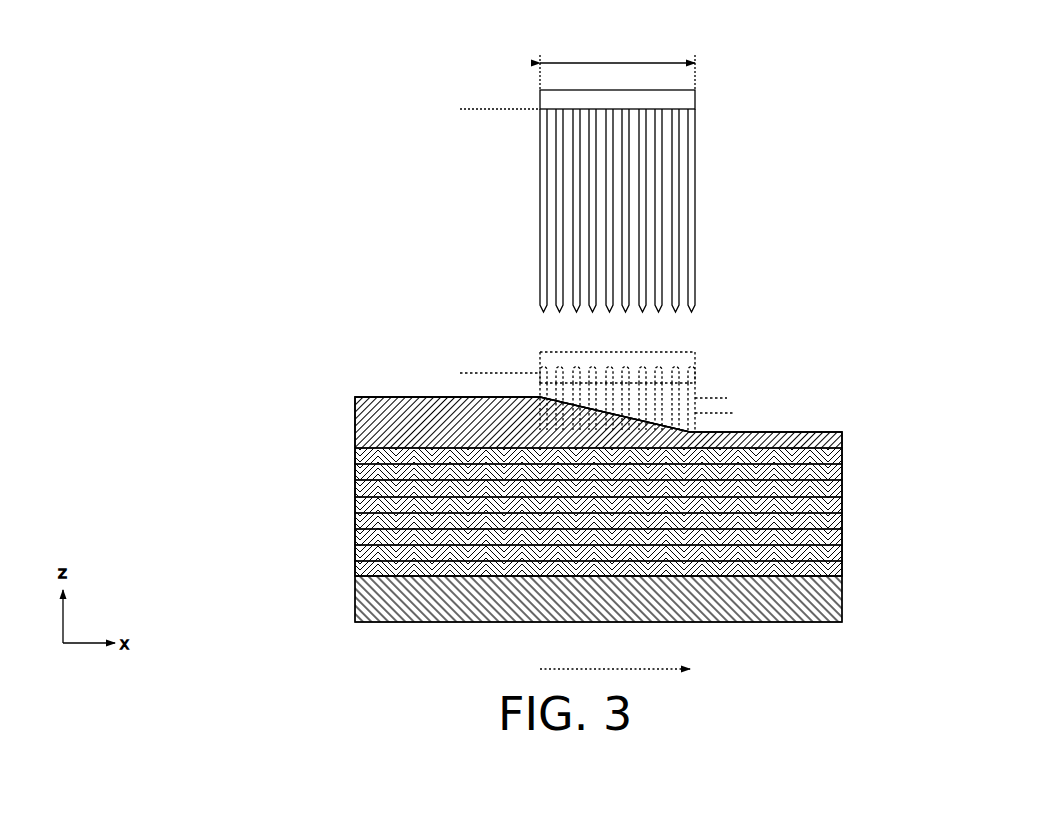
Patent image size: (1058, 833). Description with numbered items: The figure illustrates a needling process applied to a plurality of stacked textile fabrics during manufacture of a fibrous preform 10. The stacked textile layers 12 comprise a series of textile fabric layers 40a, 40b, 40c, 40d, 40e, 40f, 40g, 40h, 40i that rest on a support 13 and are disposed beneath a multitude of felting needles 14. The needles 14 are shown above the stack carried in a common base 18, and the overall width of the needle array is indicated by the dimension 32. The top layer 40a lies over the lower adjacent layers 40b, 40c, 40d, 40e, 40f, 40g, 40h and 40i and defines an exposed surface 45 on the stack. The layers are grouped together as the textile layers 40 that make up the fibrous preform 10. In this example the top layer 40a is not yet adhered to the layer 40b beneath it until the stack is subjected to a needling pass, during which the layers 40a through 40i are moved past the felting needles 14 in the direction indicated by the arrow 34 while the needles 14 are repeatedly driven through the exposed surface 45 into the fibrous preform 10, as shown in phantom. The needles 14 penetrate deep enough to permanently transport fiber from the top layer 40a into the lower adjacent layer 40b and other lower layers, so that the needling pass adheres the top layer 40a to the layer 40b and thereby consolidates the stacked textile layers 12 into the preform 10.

The fibrous preform 10 is at (180, 502).
The stacked textile layers 12 is at (838, 512).
The support 13 is at (422, 622).
The felting needles 14 is at (715, 217).
The comb base 18 is at (695, 99).
The comb width 32 is at (630, 62).
The direction of movement 34 is at (653, 667).
The layers 40 is at (860, 430).
The top layer 40a is at (355, 410).
The lower adjacent layer 40b is at (355, 456).
The lower adjacent layer 40c is at (355, 475).
The lower adjacent layer 40d is at (355, 489).
The lower adjacent layer 40e is at (355, 505).
The lower adjacent layer 40f is at (355, 520).
The lower adjacent layer 40g is at (355, 537).
The lower adjacent layer 40h is at (355, 553).
The lower adjacent layer 40i is at (355, 571).
The exposed surface 45 is at (393, 395).